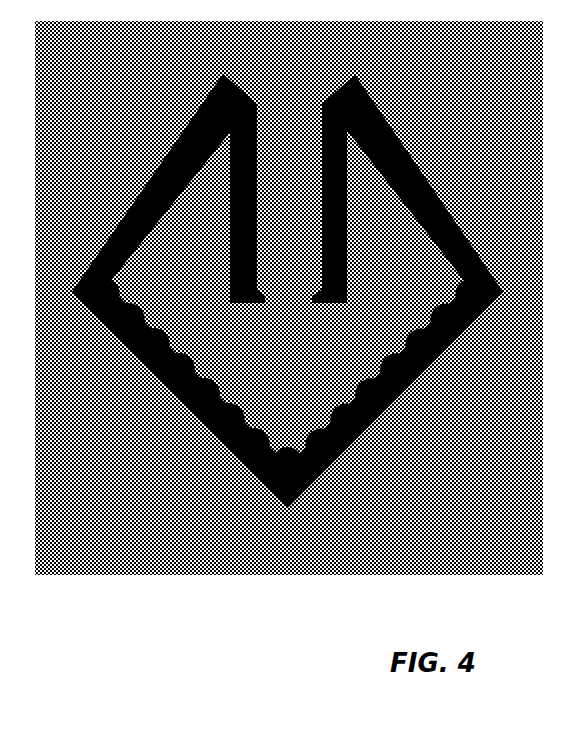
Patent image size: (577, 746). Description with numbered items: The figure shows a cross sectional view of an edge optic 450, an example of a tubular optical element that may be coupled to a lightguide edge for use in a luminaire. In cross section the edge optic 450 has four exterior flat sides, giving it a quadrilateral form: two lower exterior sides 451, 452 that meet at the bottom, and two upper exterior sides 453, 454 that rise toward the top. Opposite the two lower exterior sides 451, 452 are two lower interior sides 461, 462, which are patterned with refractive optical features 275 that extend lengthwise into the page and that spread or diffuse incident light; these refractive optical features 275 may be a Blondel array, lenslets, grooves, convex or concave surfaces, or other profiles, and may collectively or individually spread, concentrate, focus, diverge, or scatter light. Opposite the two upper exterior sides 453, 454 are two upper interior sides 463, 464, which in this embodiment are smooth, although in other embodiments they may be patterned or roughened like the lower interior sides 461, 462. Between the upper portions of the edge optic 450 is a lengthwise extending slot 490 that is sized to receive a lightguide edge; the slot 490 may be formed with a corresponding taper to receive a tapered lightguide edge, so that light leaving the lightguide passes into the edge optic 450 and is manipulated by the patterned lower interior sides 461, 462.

The edge optic 450 is at (199, 494).
The lower exterior side 451 is at (396, 433).
The lower exterior side 452 is at (170, 402).
The upper exterior side 453 is at (433, 163).
The upper exterior side 454 is at (145, 173).
The lower interior side 461 is at (400, 331).
The lower interior side 462 is at (203, 338).
The upper interior side 463 is at (430, 231).
The upper interior side 464 is at (134, 254).
The slot 490 is at (308, 198).
The refractive optical features 275 is at (222, 366).